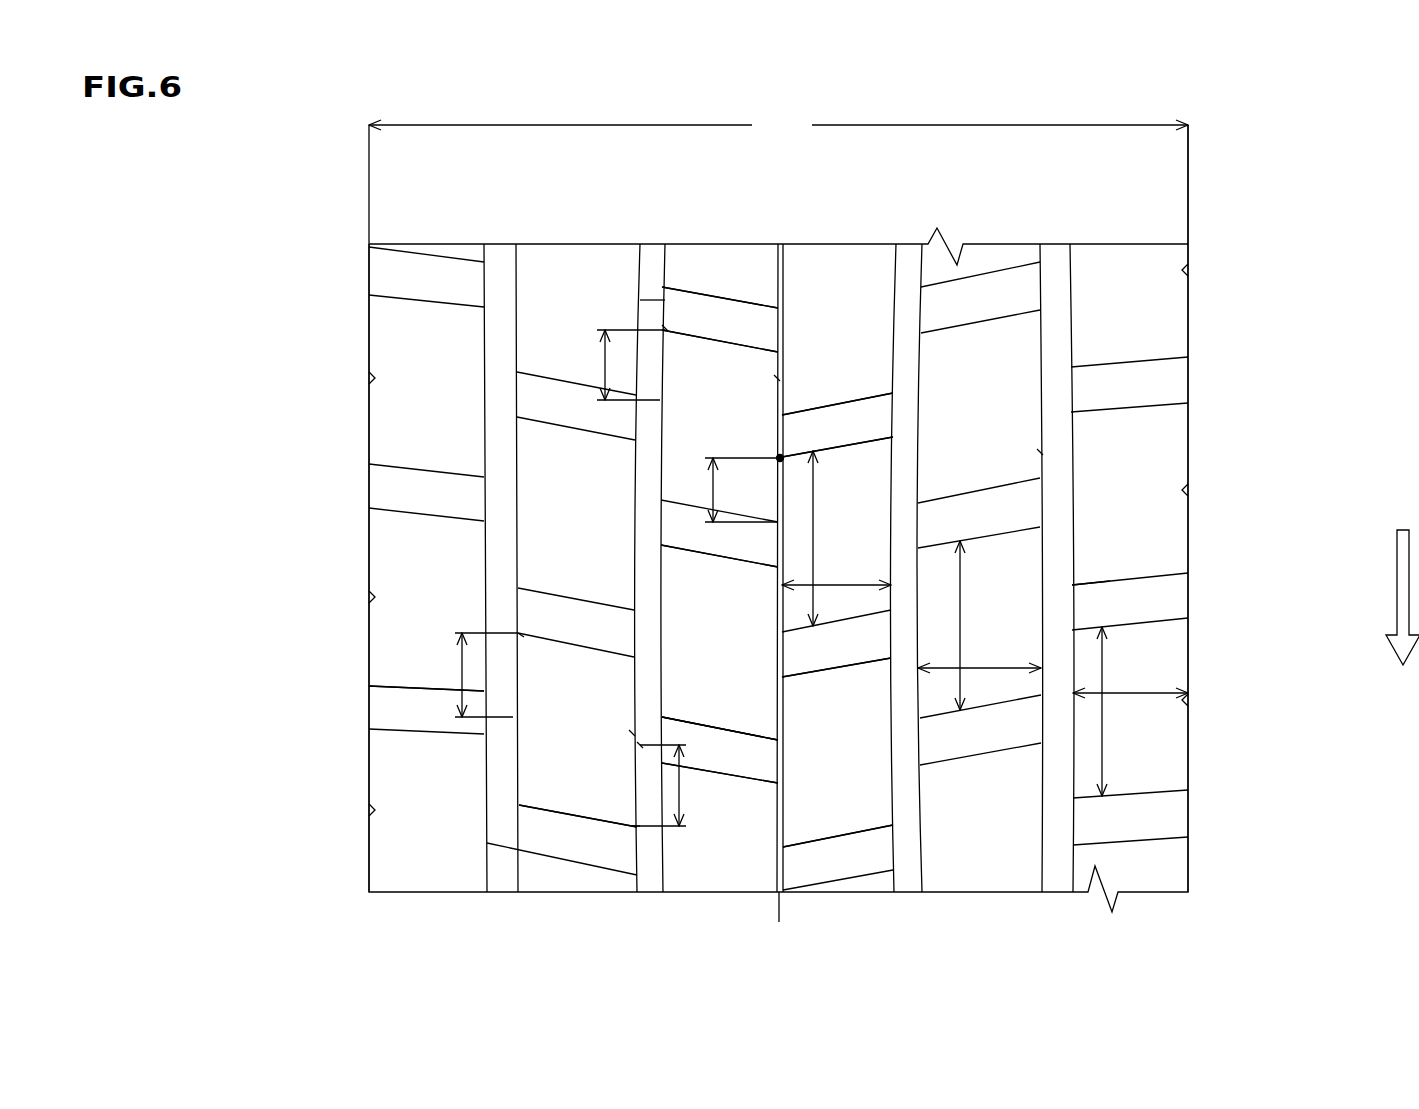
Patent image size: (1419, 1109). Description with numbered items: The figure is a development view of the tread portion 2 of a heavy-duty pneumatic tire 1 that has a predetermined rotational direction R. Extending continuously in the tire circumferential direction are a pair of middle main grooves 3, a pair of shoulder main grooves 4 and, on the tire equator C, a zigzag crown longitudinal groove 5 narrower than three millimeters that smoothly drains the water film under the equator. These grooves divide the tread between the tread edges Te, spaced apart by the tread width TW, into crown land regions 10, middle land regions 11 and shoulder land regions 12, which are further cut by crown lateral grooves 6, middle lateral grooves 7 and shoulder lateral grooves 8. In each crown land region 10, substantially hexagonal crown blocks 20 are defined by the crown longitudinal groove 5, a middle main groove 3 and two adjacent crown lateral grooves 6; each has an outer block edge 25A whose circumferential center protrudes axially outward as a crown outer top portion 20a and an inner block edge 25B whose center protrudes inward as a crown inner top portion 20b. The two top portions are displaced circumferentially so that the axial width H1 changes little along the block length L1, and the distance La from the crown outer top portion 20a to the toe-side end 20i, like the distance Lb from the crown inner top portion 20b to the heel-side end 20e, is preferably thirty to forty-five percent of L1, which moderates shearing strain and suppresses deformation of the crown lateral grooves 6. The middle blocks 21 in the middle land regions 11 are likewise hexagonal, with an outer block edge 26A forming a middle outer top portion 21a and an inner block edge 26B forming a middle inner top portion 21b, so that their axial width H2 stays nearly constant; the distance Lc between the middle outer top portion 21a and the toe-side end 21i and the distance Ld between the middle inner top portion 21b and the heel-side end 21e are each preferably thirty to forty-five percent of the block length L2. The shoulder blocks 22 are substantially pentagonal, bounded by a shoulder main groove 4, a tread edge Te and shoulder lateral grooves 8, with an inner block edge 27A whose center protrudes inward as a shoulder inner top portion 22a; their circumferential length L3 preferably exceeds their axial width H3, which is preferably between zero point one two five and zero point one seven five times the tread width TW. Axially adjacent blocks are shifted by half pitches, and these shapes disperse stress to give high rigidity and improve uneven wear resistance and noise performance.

The tire 1 is at (1283, 175).
The tread portion 2 is at (1203, 240).
The middle main grooves 3 is at (652, 272).
The shoulder main grooves 4 is at (498, 288).
The crown longitudinal groove 5 is at (785, 245).
The crown lateral grooves 6 is at (717, 750).
The middle lateral grooves 7 is at (540, 835).
The shoulder lateral grooves 8 is at (428, 708).
The crown land regions 10 is at (683, 848).
The middle land regions 11 is at (542, 287).
The shoulder land regions 12 is at (427, 342).
The crown blocks 20 is at (560, 431).
The crown outer top portion 20a is at (660, 402).
The crown inner top portion 20b is at (783, 408).
The heel-side end 20e is at (777, 524).
The toe-side end 20i is at (667, 328).
The middle blocks 21 is at (567, 542).
The middle outer top portion 21a is at (513, 717).
The middle inner top portion 21b is at (640, 746).
The heel-side end 21e is at (632, 827).
The toe-side end 21i is at (518, 636).
The shoulder blocks 22 is at (418, 630).
The shoulder inner top portion 22a is at (1070, 497).
The outer block edge 25A is at (660, 330).
The inner block edge 25B is at (777, 380).
The outer block edge 26A is at (640, 745).
The inner block edge 26B is at (632, 733).
The inner block edge 27A is at (1040, 452).
The tire equator C is at (778, 244).
The tread edges Te is at (369, 312).
The tread width TW is at (778, 125).
The distance La is at (598, 382).
The distance Lb is at (705, 490).
The distance Lc is at (455, 676).
The distance Ld is at (679, 787).
The length of the crown block L1 is at (834, 538).
The length of the middle block L2 is at (982, 625).
The length of the shoulder block L3 is at (1130, 726).
The tire axial width of the crown block H1 is at (836, 568).
The tire axial width of the middle block H2 is at (979, 651).
The width of the shoulder block H3 is at (1131, 711).
The rotational direction R is at (1402, 618).